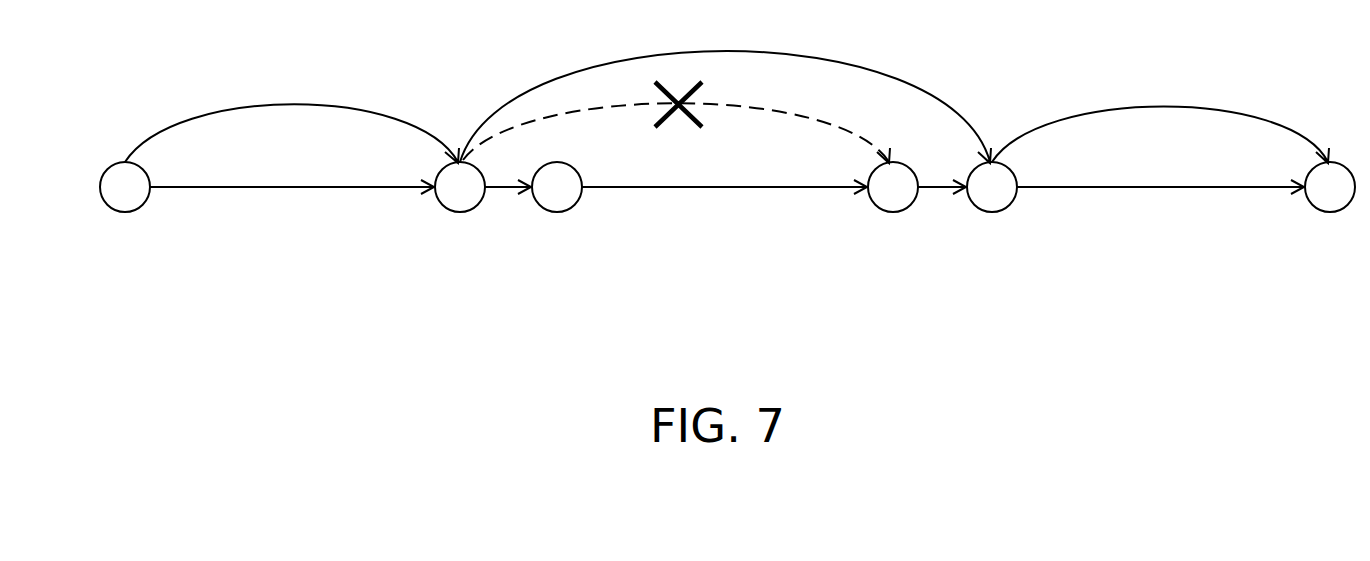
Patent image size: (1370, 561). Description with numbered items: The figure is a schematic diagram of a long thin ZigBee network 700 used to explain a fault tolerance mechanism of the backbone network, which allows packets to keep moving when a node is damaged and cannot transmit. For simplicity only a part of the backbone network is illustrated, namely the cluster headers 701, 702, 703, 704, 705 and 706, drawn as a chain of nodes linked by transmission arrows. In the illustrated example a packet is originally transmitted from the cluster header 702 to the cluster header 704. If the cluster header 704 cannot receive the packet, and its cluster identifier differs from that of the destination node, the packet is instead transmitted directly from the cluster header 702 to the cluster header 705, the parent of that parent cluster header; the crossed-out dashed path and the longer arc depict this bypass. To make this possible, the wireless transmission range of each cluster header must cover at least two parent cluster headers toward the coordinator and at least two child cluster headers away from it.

The long thin ZigBee network 700 is at (727, 217).
The cluster header 701 is at (122, 212).
The cluster header 702 is at (458, 212).
The cluster header 703 is at (554, 212).
The cluster header 704 is at (891, 212).
The cluster header 705 is at (989, 212).
The cluster header 706 is at (1328, 212).